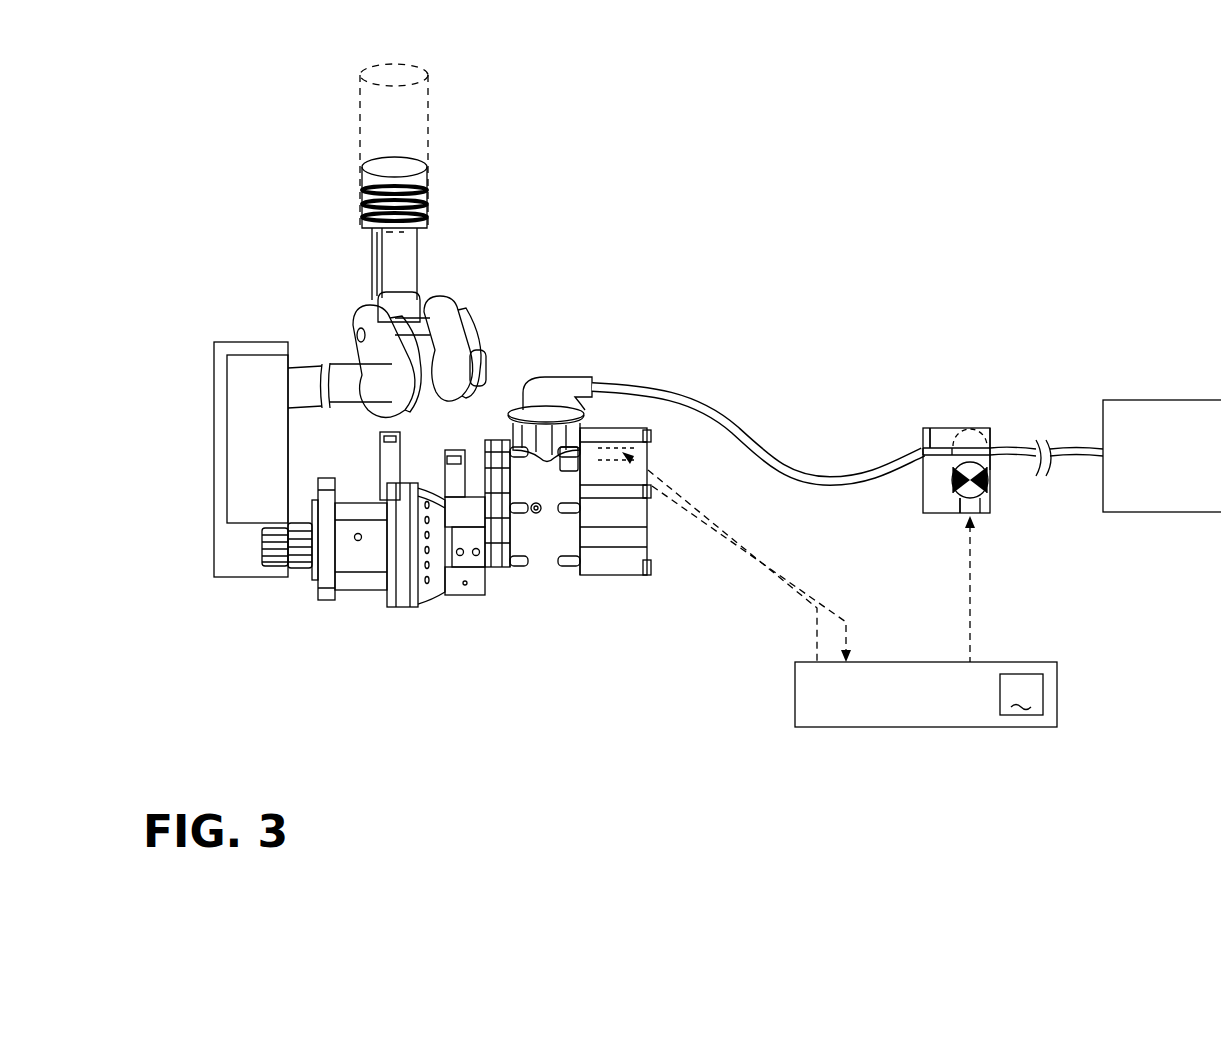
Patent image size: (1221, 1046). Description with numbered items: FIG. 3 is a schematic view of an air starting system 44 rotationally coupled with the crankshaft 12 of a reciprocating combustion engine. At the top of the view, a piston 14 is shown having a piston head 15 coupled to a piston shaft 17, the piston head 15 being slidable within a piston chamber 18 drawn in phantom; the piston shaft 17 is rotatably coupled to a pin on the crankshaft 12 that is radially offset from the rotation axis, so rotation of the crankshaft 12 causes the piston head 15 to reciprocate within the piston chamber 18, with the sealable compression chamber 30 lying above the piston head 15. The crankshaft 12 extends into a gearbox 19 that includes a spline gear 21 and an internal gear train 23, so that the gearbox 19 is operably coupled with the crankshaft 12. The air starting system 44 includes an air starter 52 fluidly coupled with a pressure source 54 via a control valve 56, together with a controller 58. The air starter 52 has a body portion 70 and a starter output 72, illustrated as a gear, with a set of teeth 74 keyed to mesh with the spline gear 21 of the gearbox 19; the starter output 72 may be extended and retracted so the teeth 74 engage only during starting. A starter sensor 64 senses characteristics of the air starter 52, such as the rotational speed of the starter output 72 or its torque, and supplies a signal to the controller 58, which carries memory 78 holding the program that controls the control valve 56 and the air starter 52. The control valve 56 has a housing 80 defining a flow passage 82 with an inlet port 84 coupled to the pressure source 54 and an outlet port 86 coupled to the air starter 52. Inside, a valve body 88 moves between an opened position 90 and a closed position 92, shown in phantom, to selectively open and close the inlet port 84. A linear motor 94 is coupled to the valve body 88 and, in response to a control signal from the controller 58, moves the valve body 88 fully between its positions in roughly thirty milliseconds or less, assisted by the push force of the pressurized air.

The crankshaft 12 is at (346, 372).
The piston 14 is at (431, 257).
The piston head 15 is at (418, 200).
The piston shaft 17 is at (403, 281).
The piston chamber 18 is at (425, 150).
The gearbox 19 is at (238, 341).
The spline gear 21 is at (272, 567).
The gear train 23 is at (226, 470).
The compression chamber 30 is at (390, 131).
The air starting system 44 is at (698, 380).
The air starter 52 is at (601, 590).
The pressure source 54 is at (1138, 400).
The control valve 56 is at (969, 415).
The controller 58 is at (929, 662).
The starter sensor 64 is at (648, 442).
The body portion 70 is at (540, 582).
The starter output 72 is at (301, 518).
The teeth 74 is at (299, 569).
The memory 78 is at (993, 662).
The housing 80 is at (993, 448).
The flow passage 82 is at (935, 448).
The inlet port 84 is at (998, 452).
The outlet port 86 is at (920, 452).
The valve body 88 is at (945, 502).
The opened position 90 is at (992, 485).
The closed position 92 is at (998, 465).
The linear motor 94 is at (980, 508).